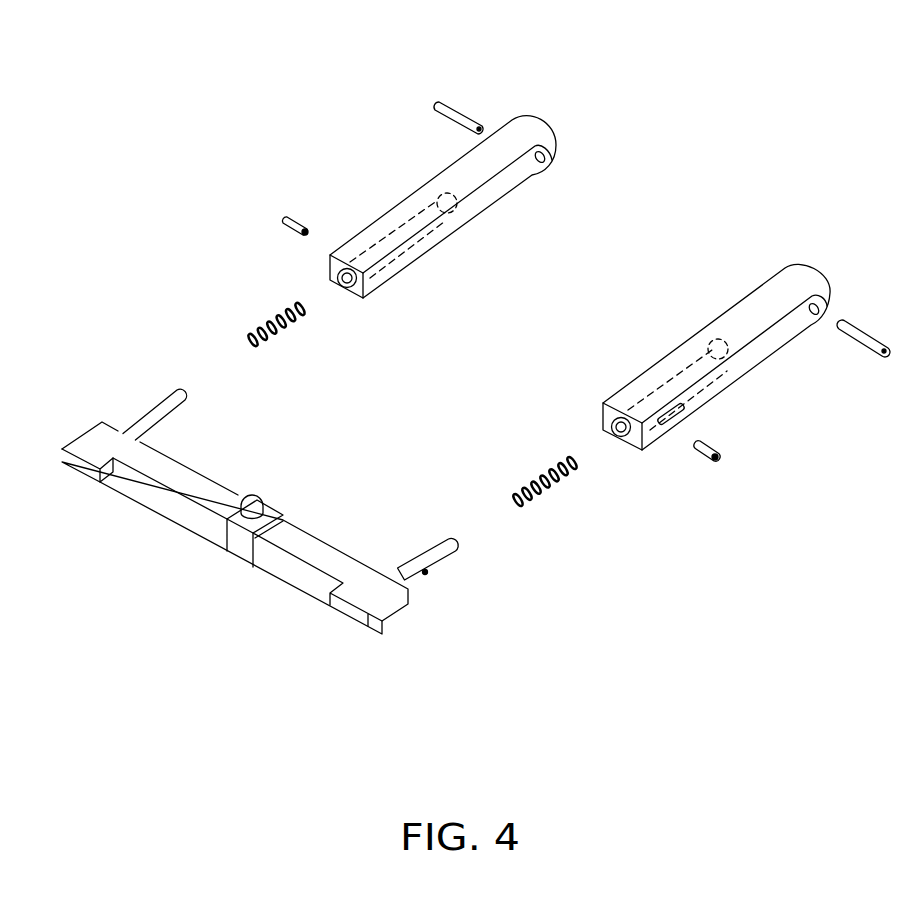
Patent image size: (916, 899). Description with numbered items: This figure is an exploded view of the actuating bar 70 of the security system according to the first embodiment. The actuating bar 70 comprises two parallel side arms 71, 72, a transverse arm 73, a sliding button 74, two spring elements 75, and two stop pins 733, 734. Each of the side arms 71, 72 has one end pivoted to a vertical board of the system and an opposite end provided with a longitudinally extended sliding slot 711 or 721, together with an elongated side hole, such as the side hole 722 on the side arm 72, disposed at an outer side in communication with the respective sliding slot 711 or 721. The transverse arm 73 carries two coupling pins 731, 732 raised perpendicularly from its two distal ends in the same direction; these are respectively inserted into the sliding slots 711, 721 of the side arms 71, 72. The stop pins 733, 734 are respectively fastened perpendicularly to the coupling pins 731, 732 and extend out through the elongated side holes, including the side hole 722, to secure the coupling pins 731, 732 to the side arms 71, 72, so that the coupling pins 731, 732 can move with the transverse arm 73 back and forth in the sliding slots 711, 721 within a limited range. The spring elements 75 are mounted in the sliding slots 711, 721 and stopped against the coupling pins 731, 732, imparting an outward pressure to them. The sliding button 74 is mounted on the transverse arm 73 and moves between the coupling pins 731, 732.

The actuating bar 70 is at (727, 163).
The side arm 71 is at (443, 213).
The longitudinally extended sliding slot 711 is at (347, 290).
The side arm 72 is at (746, 393).
The longitudinally extended sliding slot 721 is at (618, 440).
The elongated side hole 722 is at (688, 408).
The transverse arm 73 is at (282, 522).
The coupling pin 731 is at (150, 418).
The coupling pin 732 is at (440, 568).
The stop pin 733 is at (291, 213).
The stop pin 734 is at (703, 460).
The sliding button 74 is at (257, 496).
The spring element 75 is at (270, 319).